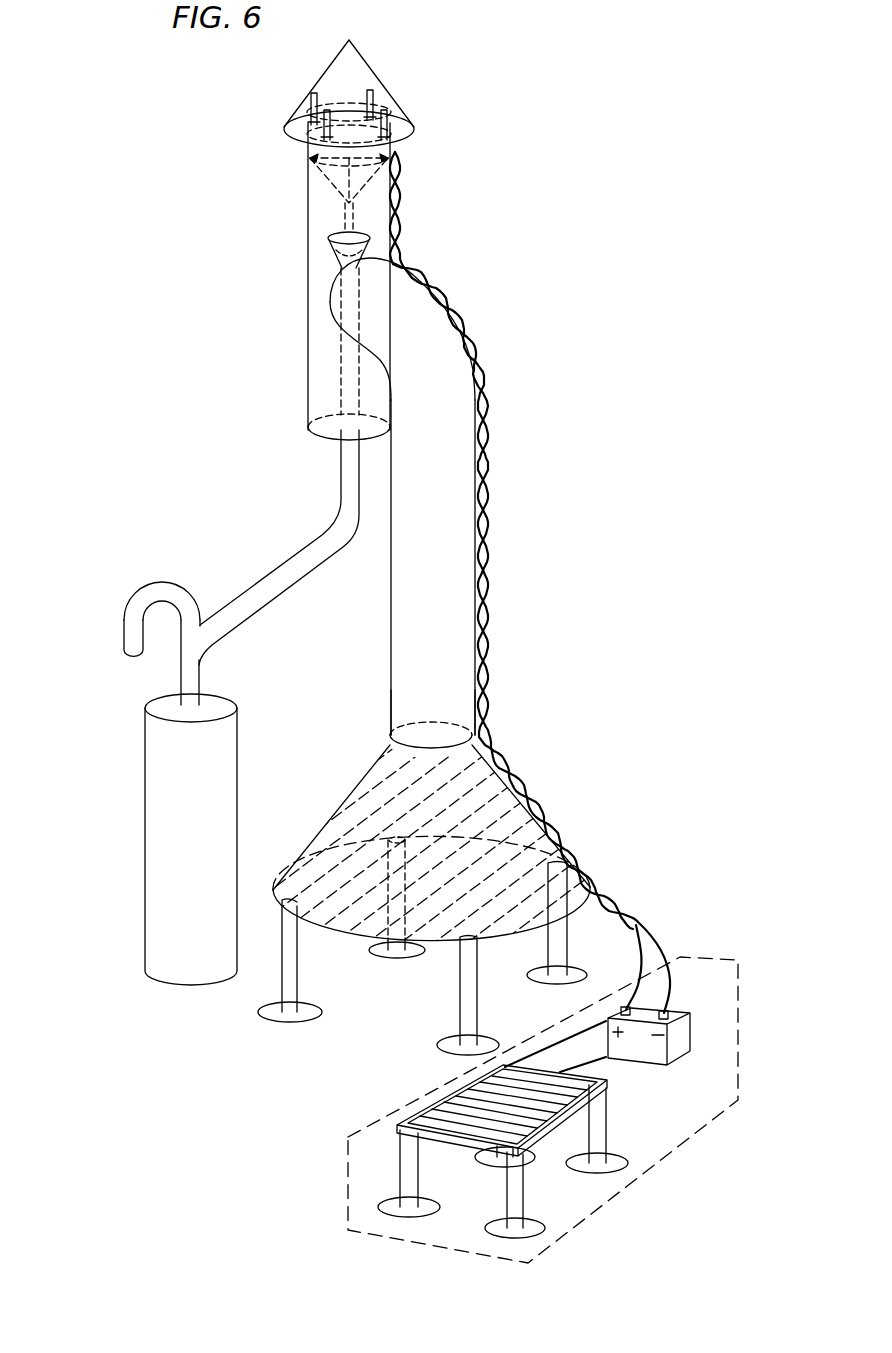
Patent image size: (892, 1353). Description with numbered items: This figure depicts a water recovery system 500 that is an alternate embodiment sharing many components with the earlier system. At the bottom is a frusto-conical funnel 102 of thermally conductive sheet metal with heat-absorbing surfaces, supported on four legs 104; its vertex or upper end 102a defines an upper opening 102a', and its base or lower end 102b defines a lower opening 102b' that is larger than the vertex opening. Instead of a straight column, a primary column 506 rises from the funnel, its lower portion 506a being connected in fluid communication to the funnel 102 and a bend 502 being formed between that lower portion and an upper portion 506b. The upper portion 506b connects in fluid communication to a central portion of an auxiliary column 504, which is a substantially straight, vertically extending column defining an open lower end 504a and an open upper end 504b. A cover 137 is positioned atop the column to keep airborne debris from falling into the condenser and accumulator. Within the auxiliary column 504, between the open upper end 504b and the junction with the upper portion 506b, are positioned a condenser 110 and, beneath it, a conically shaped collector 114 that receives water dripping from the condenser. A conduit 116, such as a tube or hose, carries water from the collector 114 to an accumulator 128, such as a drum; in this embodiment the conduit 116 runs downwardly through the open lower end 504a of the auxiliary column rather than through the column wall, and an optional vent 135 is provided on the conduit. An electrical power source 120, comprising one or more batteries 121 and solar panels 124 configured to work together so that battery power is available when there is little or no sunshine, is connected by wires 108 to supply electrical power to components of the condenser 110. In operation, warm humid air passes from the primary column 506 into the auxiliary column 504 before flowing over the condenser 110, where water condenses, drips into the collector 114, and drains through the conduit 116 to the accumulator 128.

The water recovery system 500 is at (208, 186).
The cover 137 is at (380, 84).
The open upper end 504b is at (348, 108).
The auxiliary column 504 is at (310, 375).
The open lower end 504a is at (327, 440).
The condenser 110 is at (308, 181).
The collector 114 is at (333, 252).
The conduit 116 is at (342, 300).
The wires 108 is at (402, 190).
The upper portion 506b is at (377, 267).
The primary column 506 is at (398, 568).
The lower portion 506a is at (475, 712).
The bend 502 is at (437, 353).
The vent 135 is at (125, 633).
The accumulator 128 is at (235, 735).
The funnel 102 is at (355, 785).
The upper end 102a is at (400, 719).
The upper opening 102a' is at (431, 695).
The lower end 102b is at (431, 952).
The lower opening 102b' is at (431, 919).
The legs 104 is at (287, 982).
The electrical power source 120 is at (740, 990).
The batteries 121 is at (682, 1048).
The solar panels 124 is at (605, 1080).